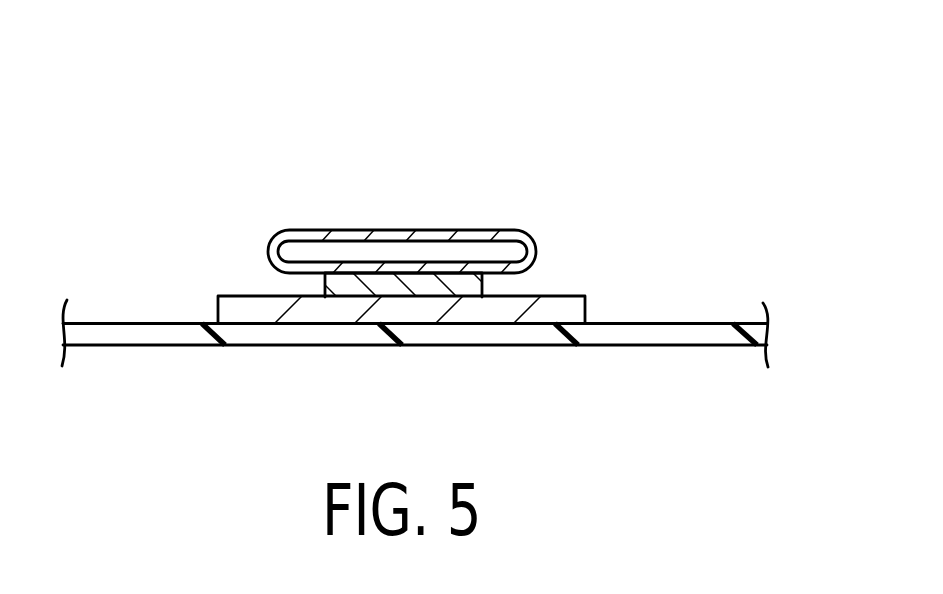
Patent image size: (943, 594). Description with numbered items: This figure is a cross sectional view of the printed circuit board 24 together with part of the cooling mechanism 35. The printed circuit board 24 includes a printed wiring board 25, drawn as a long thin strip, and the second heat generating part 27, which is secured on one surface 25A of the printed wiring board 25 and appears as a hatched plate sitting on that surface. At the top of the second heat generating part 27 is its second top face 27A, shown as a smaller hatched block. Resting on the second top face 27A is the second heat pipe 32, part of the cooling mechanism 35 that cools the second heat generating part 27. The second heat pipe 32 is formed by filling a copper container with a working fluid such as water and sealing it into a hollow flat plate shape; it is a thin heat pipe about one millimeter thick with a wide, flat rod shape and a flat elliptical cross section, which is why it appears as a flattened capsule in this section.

The cooling mechanism 35 is at (183, 125).
The printed circuit board 24 is at (562, 168).
The second heat pipe 32 is at (348, 230).
The second top face 27A is at (437, 273).
The second heat generating part 27 is at (413, 312).
The printed wiring board 25 is at (665, 337).
The one surface of the printed wiring board 25A is at (708, 323).